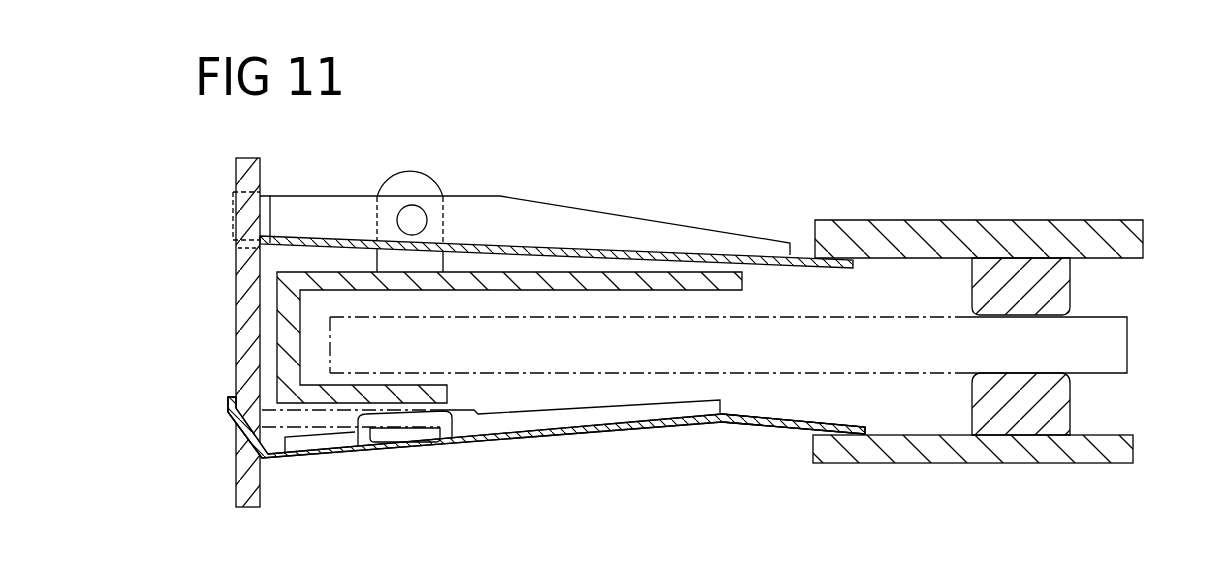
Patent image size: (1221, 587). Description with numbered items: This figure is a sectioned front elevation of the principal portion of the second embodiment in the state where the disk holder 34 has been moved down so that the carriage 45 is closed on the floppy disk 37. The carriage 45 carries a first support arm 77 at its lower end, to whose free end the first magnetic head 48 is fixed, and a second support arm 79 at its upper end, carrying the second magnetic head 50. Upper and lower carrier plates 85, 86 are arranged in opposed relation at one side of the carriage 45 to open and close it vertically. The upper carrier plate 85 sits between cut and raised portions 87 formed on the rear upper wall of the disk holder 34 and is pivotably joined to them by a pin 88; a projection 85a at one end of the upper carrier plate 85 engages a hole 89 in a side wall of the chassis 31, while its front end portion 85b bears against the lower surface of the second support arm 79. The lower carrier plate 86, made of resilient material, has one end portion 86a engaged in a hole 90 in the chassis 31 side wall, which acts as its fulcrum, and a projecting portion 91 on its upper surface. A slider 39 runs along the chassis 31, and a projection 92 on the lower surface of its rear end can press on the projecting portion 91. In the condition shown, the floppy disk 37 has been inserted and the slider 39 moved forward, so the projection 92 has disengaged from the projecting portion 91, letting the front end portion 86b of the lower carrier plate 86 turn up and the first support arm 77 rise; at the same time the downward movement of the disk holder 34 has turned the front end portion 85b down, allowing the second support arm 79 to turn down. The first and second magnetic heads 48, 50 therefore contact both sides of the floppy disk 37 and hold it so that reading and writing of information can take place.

The chassis 31 is at (236, 275).
The disk holder 34 is at (728, 290).
The floppy disk 37 is at (782, 373).
The slider 39 is at (478, 410).
The carriage 45 is at (981, 330).
The first magnetic head 48 is at (1065, 398).
The second magnetic head 50 is at (1070, 287).
The first support arm 77 is at (903, 455).
The second support arm 79 is at (895, 218).
The upper carrier plate 85 is at (637, 228).
The projection 85a is at (232, 218).
The front end portion 85b is at (845, 262).
The lower carrier plate 86 is at (650, 422).
The one end portion 86a is at (228, 400).
The front end portion 86b is at (843, 427).
The cut and raised portion 87 is at (403, 172).
The pin 88 is at (422, 215).
The hole 89 is at (250, 253).
The hole 90 is at (240, 458).
The projecting portion 91 is at (356, 414).
The projection 92 is at (447, 446).